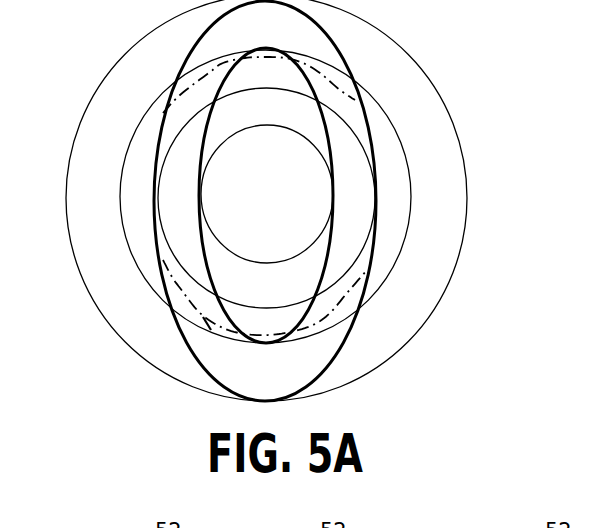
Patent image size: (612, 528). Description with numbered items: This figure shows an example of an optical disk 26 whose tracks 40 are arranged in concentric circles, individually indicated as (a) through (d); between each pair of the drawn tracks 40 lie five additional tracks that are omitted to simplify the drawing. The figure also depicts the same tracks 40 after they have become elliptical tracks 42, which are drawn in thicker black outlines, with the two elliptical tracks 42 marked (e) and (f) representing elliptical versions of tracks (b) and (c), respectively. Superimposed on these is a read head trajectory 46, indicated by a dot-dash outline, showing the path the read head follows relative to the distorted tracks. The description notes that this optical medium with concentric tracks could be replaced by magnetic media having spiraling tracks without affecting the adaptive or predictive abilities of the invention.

The optical disk 26 is at (432, 39).
The tracks 40 is at (460, 140).
The elliptical tracks 42 is at (328, 367).
The read head trajectory 46 is at (200, 332).